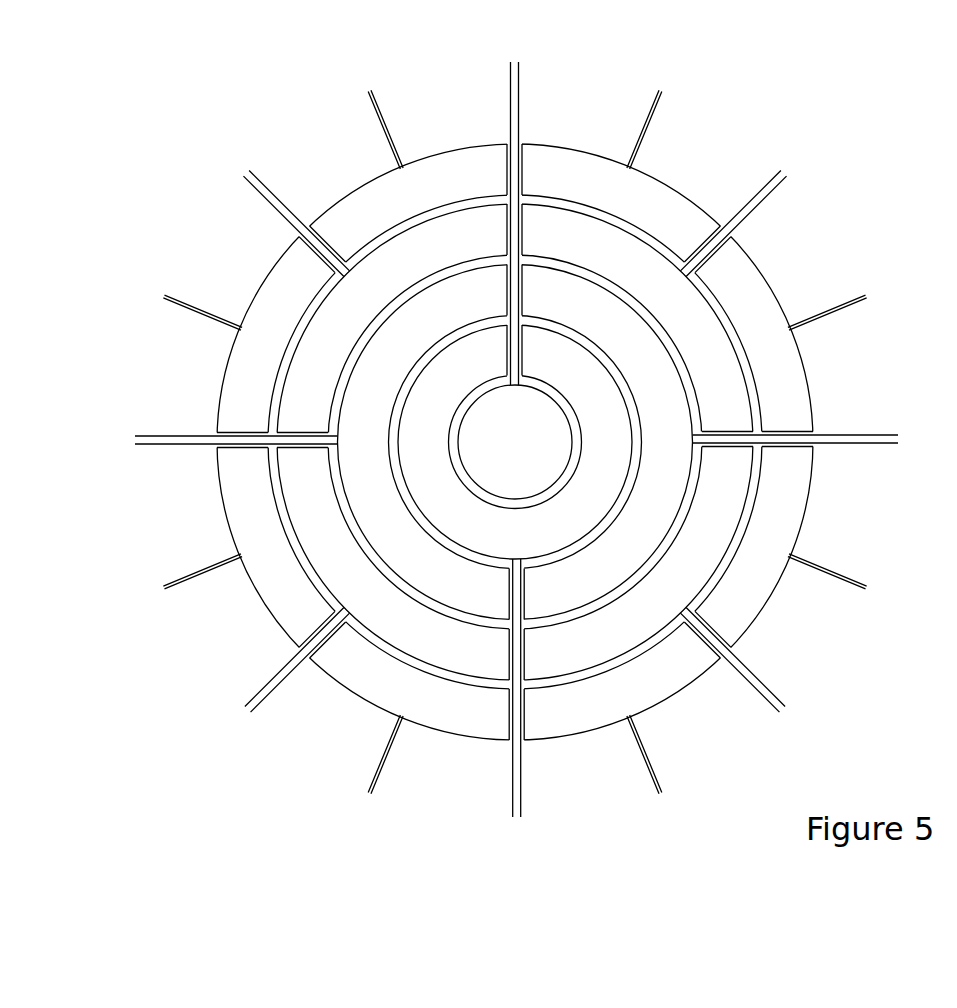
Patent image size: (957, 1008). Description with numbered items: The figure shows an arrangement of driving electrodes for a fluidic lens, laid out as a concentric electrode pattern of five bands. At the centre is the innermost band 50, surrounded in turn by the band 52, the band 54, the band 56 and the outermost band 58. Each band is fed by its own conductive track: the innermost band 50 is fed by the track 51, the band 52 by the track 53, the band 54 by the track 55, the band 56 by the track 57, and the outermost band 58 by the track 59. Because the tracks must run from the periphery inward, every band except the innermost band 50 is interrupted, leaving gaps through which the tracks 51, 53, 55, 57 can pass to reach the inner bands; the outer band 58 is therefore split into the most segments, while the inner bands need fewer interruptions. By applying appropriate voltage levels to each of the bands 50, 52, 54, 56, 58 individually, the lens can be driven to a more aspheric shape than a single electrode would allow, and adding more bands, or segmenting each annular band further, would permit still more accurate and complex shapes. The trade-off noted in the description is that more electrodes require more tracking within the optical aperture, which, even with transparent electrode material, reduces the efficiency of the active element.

The innermost band 50 is at (527, 455).
The track 51 is at (517, 90).
The band 52 is at (616, 453).
The track 53 is at (512, 785).
The band 54 is at (366, 457).
The track 55 is at (150, 447).
The band 56 is at (368, 310).
The track 57 is at (266, 190).
The band 58 is at (478, 195).
The track 59 is at (380, 112).